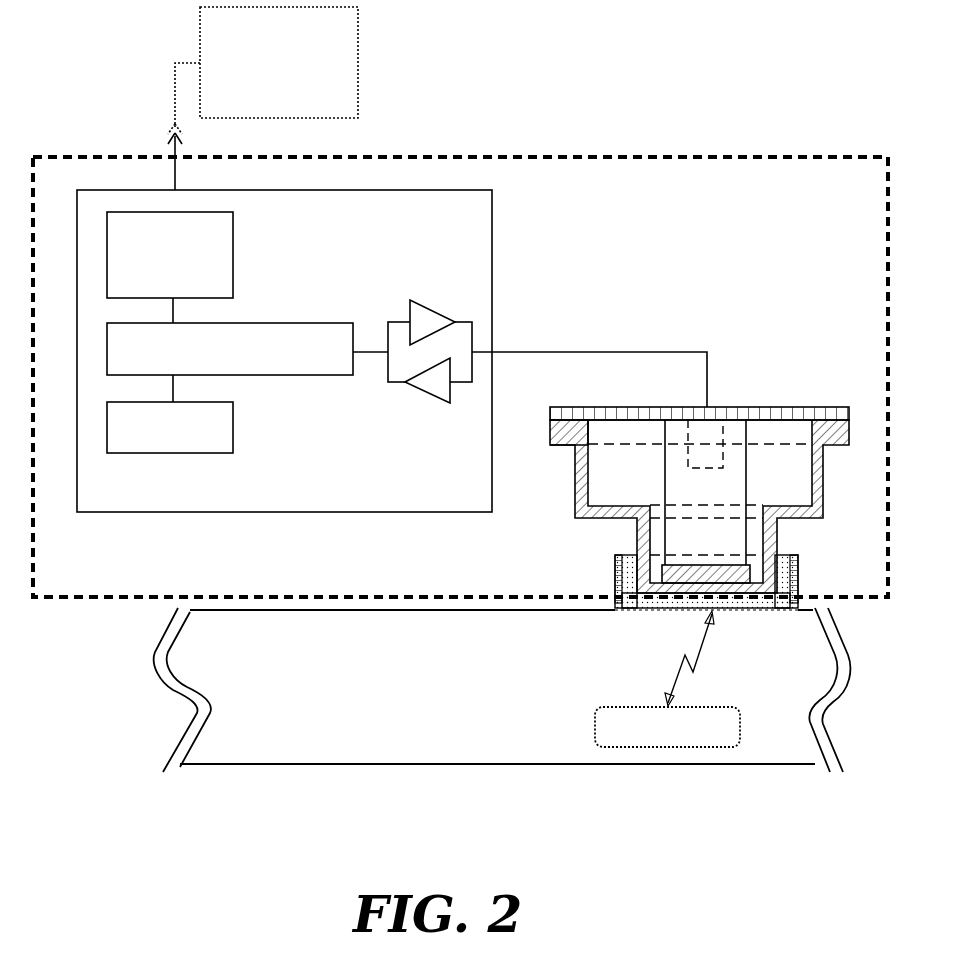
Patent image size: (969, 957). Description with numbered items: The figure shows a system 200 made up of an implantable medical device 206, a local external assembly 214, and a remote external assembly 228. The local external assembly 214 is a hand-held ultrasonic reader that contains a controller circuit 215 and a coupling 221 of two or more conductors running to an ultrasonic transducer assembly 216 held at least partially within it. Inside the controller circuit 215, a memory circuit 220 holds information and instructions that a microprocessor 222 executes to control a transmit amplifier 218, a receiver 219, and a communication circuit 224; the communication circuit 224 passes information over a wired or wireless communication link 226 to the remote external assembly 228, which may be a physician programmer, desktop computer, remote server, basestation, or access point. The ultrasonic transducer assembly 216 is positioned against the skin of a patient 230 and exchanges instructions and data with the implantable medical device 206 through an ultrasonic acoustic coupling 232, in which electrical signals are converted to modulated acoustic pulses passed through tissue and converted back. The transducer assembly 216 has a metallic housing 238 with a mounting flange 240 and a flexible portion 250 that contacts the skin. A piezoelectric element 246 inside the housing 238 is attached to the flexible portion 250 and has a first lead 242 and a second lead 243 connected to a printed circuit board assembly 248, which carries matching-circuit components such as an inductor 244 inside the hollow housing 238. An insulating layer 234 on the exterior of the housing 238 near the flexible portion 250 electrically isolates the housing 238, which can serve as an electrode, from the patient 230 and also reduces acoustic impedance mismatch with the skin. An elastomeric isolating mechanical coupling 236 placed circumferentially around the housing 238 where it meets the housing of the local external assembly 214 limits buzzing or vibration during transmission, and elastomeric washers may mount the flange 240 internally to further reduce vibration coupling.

The system 200 is at (524, 92).
The implantable medical device 206 is at (780, 695).
The local external assembly 214 is at (148, 600).
The controller circuit 215 is at (440, 512).
The ultrasonic transducer assembly 216 is at (684, 477).
The transmit amplifier 218 is at (422, 300).
The receiver 219 is at (425, 401).
The memory circuit 220 is at (233, 427).
The coupling 221 is at (633, 350).
The microprocessor 222 is at (278, 323).
The communication circuit 224 is at (233, 247).
The communication link 226 is at (175, 173).
The remote external assembly 228 is at (358, 53).
The patient 230 is at (545, 764).
The ultrasonic acoustic coupling 232 is at (686, 662).
The insulating layer 234 is at (785, 608).
The isolating mechanical coupling 236 is at (615, 568).
The housing 238 is at (575, 485).
The mounting flange 240 is at (560, 447).
The first lead 242 is at (665, 452).
The second lead 243 is at (746, 460).
The inductor 244 is at (723, 468).
The piezoelectric element 246 is at (733, 565).
The printed circuit board assembly 248 is at (770, 407).
The flexible portion 250 is at (745, 590).